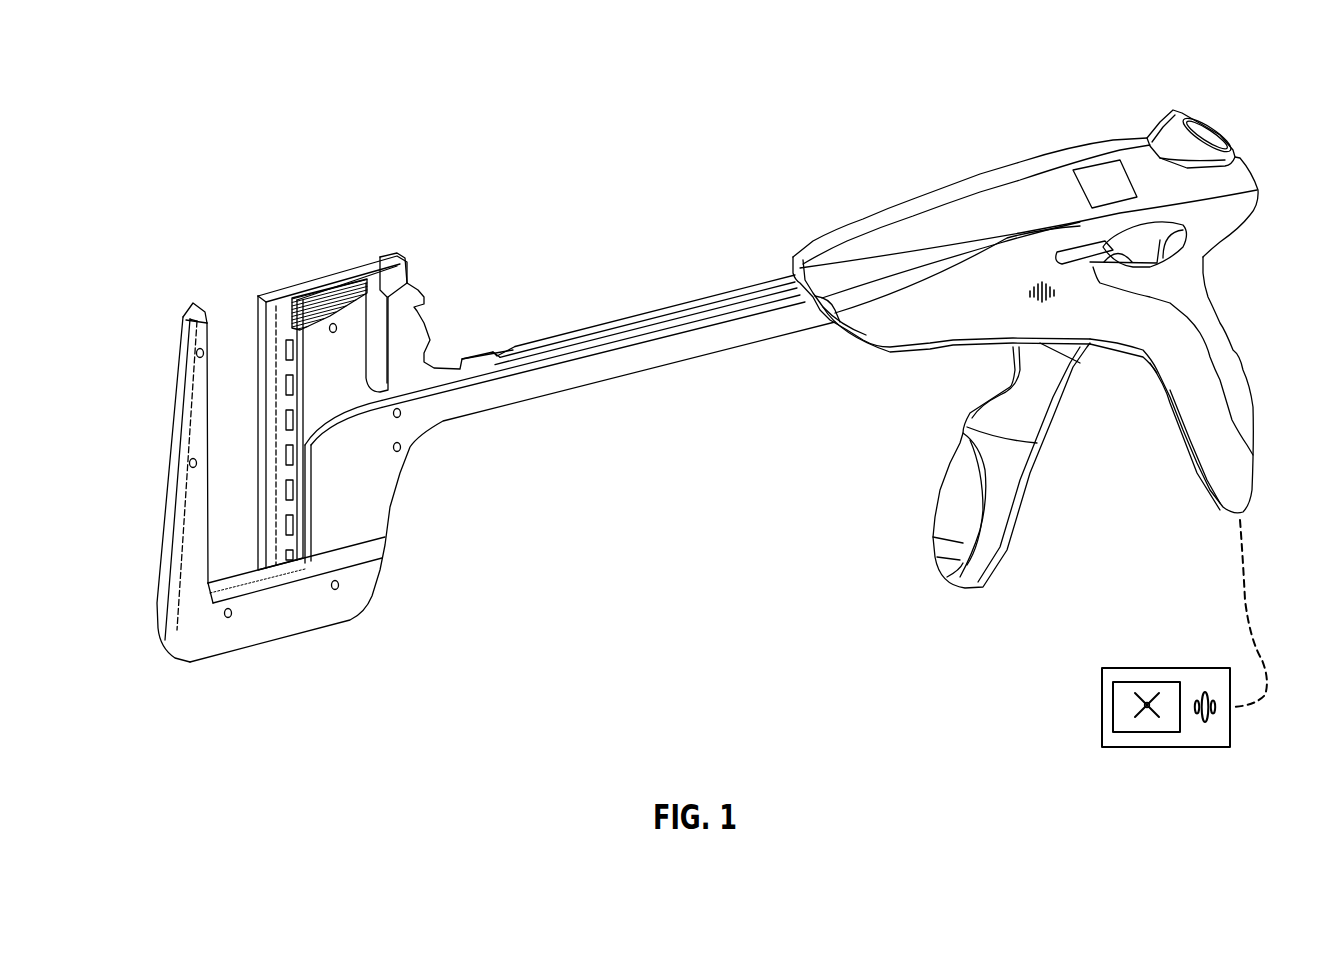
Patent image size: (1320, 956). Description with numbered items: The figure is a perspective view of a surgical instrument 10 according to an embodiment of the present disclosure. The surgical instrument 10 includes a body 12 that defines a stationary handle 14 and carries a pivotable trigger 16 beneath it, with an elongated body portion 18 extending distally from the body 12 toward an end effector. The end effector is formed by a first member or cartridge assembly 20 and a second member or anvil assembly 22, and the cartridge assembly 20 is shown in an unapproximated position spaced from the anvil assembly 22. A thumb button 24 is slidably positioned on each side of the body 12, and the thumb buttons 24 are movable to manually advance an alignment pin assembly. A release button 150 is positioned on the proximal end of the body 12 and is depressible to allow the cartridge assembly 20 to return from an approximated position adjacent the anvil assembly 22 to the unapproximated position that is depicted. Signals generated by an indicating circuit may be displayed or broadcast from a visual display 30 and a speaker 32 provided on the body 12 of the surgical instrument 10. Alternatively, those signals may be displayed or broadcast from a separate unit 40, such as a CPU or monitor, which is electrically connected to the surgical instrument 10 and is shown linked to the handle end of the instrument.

The surgical instrument 10 is at (469, 118).
The body 12 is at (913, 207).
The stationary handle 14 is at (1197, 440).
The pivotable trigger 16 is at (952, 502).
The elongated body portion 18 is at (632, 318).
The cartridge assembly 20 is at (318, 274).
The anvil assembly 22 is at (176, 412).
The thumb button 24 is at (1200, 247).
The visual display 30 is at (1097, 180).
The speaker 32 is at (1027, 290).
The separate unit 40 is at (1102, 707).
The release button 150 is at (1193, 127).